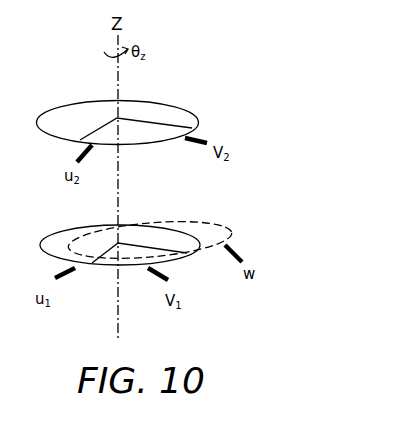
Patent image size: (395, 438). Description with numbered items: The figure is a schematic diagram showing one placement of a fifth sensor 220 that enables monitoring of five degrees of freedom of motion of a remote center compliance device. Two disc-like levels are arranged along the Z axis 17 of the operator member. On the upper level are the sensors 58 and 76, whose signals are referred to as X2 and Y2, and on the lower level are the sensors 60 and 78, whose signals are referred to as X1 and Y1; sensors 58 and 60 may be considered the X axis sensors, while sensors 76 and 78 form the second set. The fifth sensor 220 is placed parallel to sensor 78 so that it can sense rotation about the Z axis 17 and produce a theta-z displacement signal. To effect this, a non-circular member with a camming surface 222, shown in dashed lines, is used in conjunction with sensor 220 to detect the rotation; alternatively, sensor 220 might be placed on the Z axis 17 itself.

The Z axis 17 is at (119, 203).
The sensor 58 is at (77, 152).
The sensor 76 is at (197, 141).
The sensor 60 is at (62, 278).
The sensor 78 is at (169, 277).
The camming surface 222 is at (198, 222).
The fifth sensor 220 is at (239, 253).